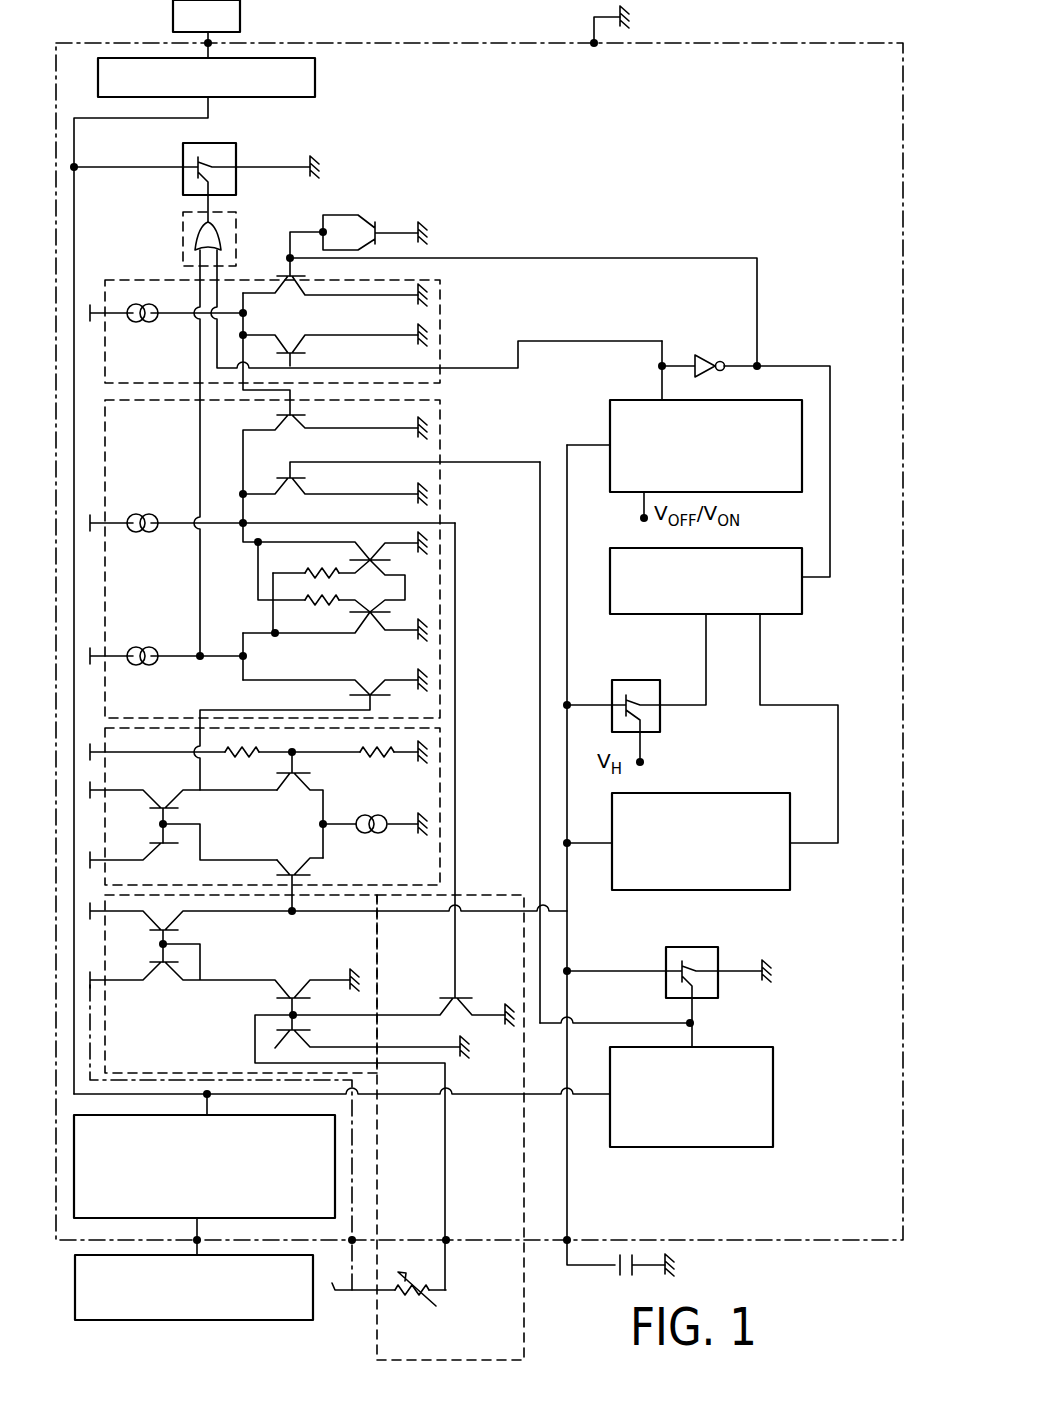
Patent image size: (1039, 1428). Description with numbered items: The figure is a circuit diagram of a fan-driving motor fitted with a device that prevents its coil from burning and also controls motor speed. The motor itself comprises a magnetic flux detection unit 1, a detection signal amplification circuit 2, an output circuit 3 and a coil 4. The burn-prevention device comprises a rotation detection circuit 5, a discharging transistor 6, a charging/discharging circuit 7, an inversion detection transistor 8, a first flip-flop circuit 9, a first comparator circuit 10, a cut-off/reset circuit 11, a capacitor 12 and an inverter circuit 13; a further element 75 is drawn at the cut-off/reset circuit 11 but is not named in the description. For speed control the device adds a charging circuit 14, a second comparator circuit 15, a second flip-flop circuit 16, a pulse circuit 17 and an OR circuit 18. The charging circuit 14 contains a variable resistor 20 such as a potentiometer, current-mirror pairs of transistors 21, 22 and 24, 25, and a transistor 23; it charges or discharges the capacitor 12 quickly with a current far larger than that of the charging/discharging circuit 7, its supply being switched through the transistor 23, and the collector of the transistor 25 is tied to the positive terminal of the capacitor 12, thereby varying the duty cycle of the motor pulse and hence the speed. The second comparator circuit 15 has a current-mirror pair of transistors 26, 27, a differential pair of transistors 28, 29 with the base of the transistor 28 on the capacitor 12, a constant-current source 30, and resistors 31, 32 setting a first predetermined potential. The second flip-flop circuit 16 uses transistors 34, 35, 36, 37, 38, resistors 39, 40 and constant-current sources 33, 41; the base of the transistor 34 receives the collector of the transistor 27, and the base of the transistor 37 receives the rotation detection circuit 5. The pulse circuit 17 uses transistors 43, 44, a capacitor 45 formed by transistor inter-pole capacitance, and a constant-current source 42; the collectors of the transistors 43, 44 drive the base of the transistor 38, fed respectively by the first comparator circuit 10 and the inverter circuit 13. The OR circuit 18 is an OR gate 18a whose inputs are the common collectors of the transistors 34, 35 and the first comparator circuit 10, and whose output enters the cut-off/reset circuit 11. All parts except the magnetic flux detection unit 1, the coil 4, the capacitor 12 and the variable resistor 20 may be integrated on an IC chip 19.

The magnetic flux detection unit 1 is at (75, 1290).
The detection signal amplification circuit 2 is at (74, 1218).
The output circuit 3 is at (98, 75).
The coil 4 is at (173, 14).
The rotation detection circuit 5 is at (738, 1047).
The discharging transistor 6 is at (690, 947).
The charging/discharging circuit 7 is at (740, 793).
The inversion detection transistor 8 is at (650, 680).
The first flip-flop circuit 9 is at (622, 548).
The first comparator circuit 10 is at (642, 400).
The cut-off/reset circuit 11 is at (236, 150).
The capacitor 12 is at (616, 1276).
The inverter circuit 13 is at (708, 355).
The charging circuit 14 is at (175, 1073).
The second comparator circuit 15 is at (105, 862).
The second flip-flop circuit 16 is at (105, 622).
The pulse circuit 17 is at (100, 296).
The OR circuit 18 is at (199, 222).
The OR gate 18a is at (212, 236).
The IC chip 19 is at (88, 43).
The variable resistor 20 is at (416, 1282).
The transistor 21 is at (278, 1050).
The transistor 22 is at (288, 988).
The transistor 23 is at (470, 1012).
The transistor 24 is at (156, 985).
The transistor 25 is at (180, 936).
The transistor 26 is at (160, 850).
The transistor 27 is at (160, 800).
The transistor 28 is at (290, 866).
The transistor 29 is at (290, 790).
The constant-current source 30 is at (372, 813).
The resistor 31 is at (250, 758).
The resistor 32 is at (370, 758).
The constant-current source 33 is at (162, 626).
The transistor 34 is at (388, 690).
The transistor 35 is at (388, 622).
The transistor 36 is at (392, 556).
The transistor 37 is at (290, 476).
The transistor 38 is at (302, 420).
The resistor 39 is at (322, 607).
The resistor 40 is at (322, 566).
The constant-current source 41 is at (150, 514).
The constant-current source 42 is at (145, 322).
The transistor 43 is at (300, 342).
The transistor 44 is at (300, 286).
The capacitor 45 is at (376, 236).
The output transistor 75 is at (183, 160).